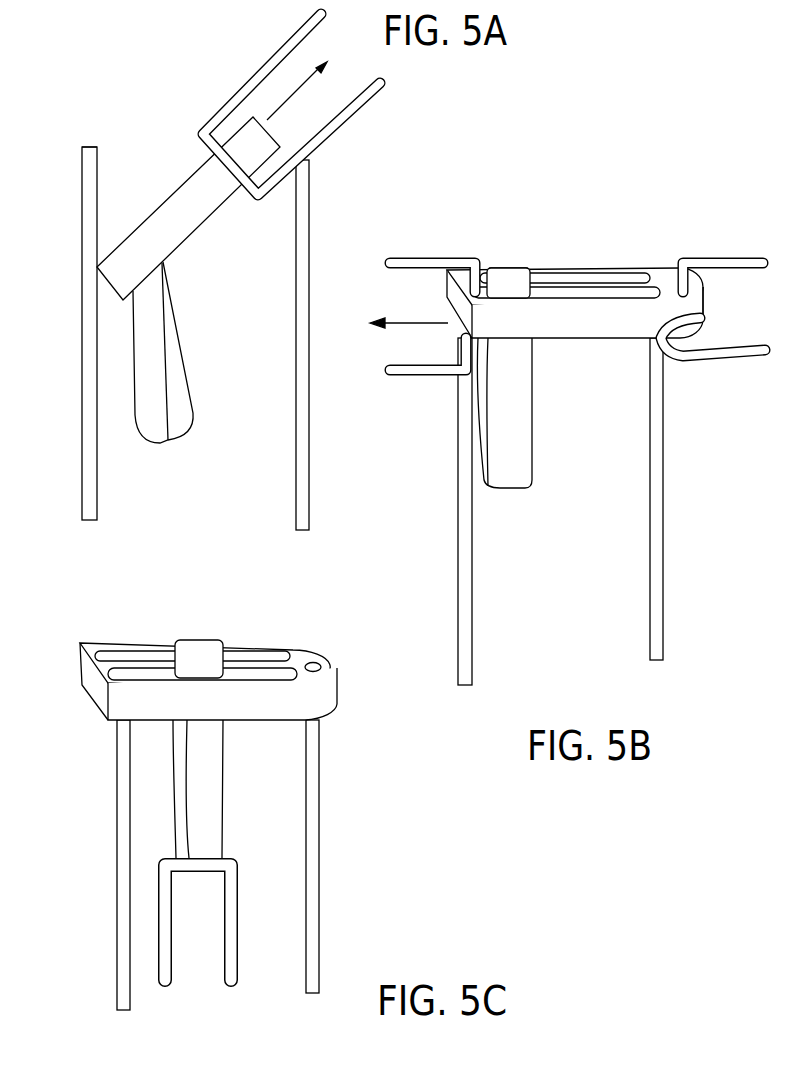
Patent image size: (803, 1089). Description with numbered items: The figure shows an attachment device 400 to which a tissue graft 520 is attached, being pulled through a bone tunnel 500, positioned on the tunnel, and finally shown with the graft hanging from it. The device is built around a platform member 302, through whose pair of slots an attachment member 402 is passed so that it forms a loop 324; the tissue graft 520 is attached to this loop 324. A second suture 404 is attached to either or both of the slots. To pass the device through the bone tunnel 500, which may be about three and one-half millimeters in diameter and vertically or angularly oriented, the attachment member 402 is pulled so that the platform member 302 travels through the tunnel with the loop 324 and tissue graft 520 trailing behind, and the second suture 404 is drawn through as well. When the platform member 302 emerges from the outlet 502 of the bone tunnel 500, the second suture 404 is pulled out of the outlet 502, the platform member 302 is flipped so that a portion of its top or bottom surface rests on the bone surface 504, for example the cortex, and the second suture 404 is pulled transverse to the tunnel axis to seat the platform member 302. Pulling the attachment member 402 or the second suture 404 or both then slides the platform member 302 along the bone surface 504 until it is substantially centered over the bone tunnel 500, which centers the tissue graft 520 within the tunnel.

In FIG. 5A, the platform member 302 is at (105, 268).
In FIG. 5B, the platform member 302 is at (575, 303).
In FIG. 5C, the platform member 302 is at (327, 665).
In FIG. 5A, the loop 324 is at (152, 430).
In FIG. 5B, the loop 324 is at (515, 455).
In FIG. 5B, the attachment device 400 is at (567, 217).
In FIG. 5A, the attachment member 402 is at (250, 78).
In FIG. 5B, the attachment member 402 is at (733, 258).
In FIG. 5B, the second suture 404 is at (404, 262).
In FIG. 5A, the bone tunnel 500 is at (90, 152).
In FIG. 5B, the bone tunnel 500 is at (655, 565).
In FIG. 5C, the bone tunnel 500 is at (318, 843).
In FIG. 5A, the outlet 502 is at (125, 157).
In FIG. 5B, the outlet 502 is at (590, 643).
In FIG. 5C, the outlet 502 is at (287, 940).
In FIG. 5A, the bone surface 504 is at (90, 147).
In FIG. 5B, the bone surface 504 is at (690, 325).
In FIG. 5C, the tissue graft 520 is at (163, 890).